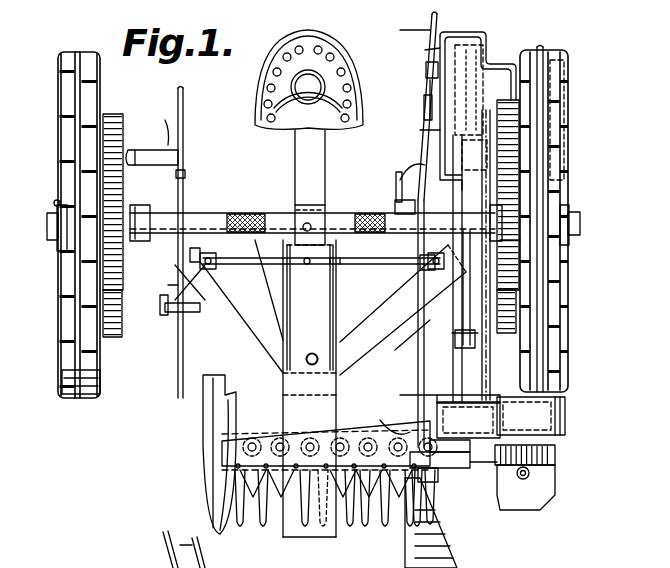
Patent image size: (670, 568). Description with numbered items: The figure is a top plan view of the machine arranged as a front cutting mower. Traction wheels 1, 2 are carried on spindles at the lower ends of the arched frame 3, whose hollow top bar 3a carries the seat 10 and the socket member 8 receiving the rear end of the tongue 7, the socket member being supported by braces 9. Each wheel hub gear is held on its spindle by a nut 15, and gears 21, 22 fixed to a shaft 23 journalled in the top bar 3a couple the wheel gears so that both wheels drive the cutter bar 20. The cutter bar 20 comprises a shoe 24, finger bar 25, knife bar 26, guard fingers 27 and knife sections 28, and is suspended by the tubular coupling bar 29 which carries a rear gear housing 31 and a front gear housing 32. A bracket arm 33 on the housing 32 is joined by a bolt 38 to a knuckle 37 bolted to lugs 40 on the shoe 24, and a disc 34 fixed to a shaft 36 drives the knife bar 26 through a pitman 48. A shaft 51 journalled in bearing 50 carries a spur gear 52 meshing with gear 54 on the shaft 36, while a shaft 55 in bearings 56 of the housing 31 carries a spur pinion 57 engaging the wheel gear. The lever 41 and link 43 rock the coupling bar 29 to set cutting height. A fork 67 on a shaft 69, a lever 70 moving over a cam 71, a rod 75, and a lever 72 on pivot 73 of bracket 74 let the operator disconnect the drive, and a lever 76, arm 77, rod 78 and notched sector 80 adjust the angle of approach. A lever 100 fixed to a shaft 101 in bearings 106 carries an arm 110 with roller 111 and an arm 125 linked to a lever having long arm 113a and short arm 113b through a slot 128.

The traction wheel 1 is at (70, 366).
The traction wheel 2 is at (556, 292).
The arched frame 3 is at (214, 212).
The top bar 3a is at (282, 214).
The tongue 7 is at (300, 392).
The socket member 8 is at (339, 312).
The braces 9 is at (228, 312).
The seat 10 is at (262, 112).
The nut 15 is at (47, 226).
The cutter bar 20 is at (344, 425).
The gear 21 is at (124, 138).
The gear 22 is at (517, 328).
The shaft 23 is at (545, 195).
The shoe 24 is at (428, 528).
The finger bar 25 is at (262, 452).
The knife bar 26 is at (203, 450).
The guard fingers 27 is at (283, 520).
The knife sections 28 is at (250, 500).
The tubular coupling bar 29 is at (462, 310).
The gear housing 31 is at (431, 22).
The gear housing 32 is at (437, 398).
The bracket arm 33 is at (530, 480).
The disc 34 is at (556, 452).
The shaft 36 is at (142, 206).
The knuckle 37 is at (455, 470).
The bolt 38 is at (412, 500).
The lugs 40 is at (437, 478).
The lever 41 is at (455, 184).
The link 43 is at (450, 310).
The pitman 48 is at (478, 470).
The bearing 50 is at (466, 405).
The shaft 51 is at (484, 365).
The spur gear 52 is at (440, 420).
The gear 54 is at (565, 410).
The shaft 55 is at (480, 100).
The bearings 56 is at (563, 86).
The spur pinion 57 is at (520, 62).
The fork 67 is at (428, 90).
The shaft 69 is at (426, 70).
The lever 70 is at (425, 50).
The cam 71 is at (400, 30).
The lever 72 is at (396, 180).
The pivot 73 is at (395, 204).
The bracket 74 is at (400, 168).
The rod 75 is at (418, 135).
The lever 76 is at (424, 106).
The arm 77 is at (380, 420).
The rod 78 is at (418, 351).
The notched sector 80 is at (452, 165).
The lever 100 is at (175, 290).
The shaft 101 is at (224, 266).
The bearings 106 is at (210, 252).
The arm 110 is at (420, 262).
The roller 111 is at (322, 200).
The long arm 113a is at (166, 122).
The short arm 113b is at (140, 405).
The arm 125 is at (112, 566).
The slot 128 is at (184, 102).